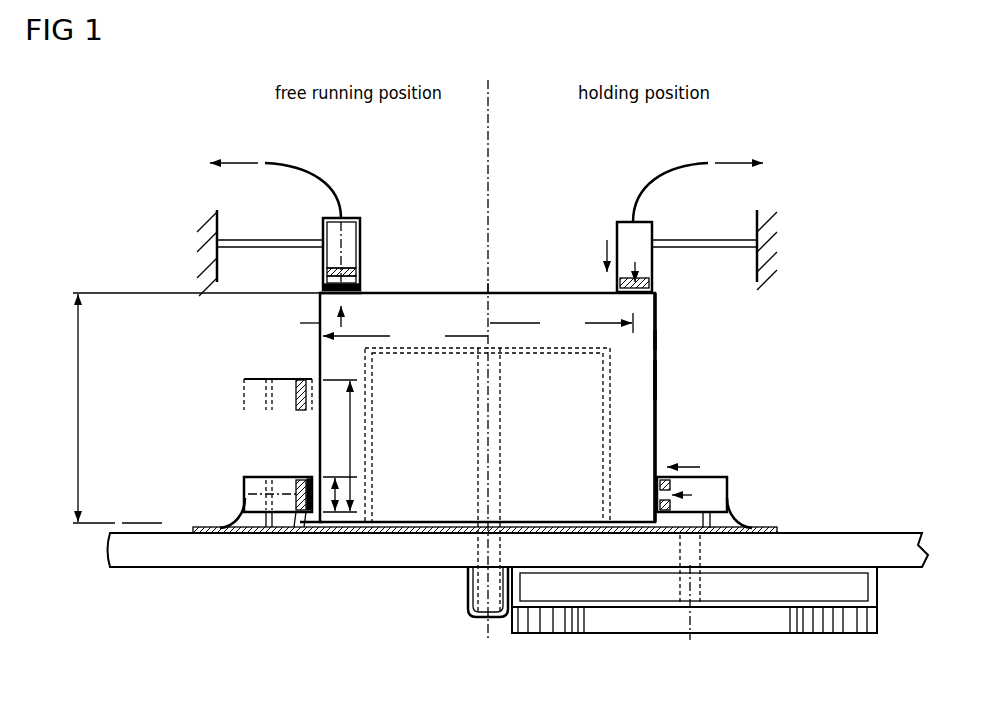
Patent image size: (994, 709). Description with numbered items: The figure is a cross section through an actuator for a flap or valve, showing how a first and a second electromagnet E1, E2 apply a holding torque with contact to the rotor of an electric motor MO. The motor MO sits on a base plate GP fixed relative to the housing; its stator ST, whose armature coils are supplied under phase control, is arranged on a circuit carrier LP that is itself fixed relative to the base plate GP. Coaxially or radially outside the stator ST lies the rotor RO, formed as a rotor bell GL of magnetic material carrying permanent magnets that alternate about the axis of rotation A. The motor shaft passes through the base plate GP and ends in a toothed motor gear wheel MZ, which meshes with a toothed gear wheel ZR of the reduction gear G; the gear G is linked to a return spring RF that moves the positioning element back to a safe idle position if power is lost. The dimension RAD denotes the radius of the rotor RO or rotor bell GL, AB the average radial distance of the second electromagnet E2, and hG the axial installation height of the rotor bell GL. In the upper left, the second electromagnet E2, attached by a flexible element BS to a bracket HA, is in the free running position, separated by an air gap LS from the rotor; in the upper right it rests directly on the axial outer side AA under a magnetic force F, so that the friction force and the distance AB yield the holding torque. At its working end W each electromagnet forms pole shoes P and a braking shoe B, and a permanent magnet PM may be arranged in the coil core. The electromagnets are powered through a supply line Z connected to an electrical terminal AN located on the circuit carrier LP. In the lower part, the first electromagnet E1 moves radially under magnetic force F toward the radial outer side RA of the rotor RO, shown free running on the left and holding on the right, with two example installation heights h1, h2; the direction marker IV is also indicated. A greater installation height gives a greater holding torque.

The axial outer side of the rotor AA is at (460, 290).
The axis of rotation A is at (487, 274).
The electric motor MO is at (668, 320).
The radial outer side of the rotor RA is at (657, 340).
The rotor RO is at (717, 380).
The rotor bell GL is at (657, 378).
The stator ST is at (597, 414).
The reduction gear G is at (627, 522).
The toothed motor gear wheel MZ is at (480, 602).
The toothed gear wheel ZR is at (618, 610).
The return spring RF is at (838, 620).
The circuit carrier LP is at (760, 528).
The base plate GP is at (893, 533).
The first electromagnet E1 is at (252, 477).
The magnetic force F is at (670, 373).
The second electromagnet E2 is at (360, 228).
The permanent magnet PM is at (323, 272).
The pole shoe P is at (373, 254).
The working end W is at (362, 280).
The braking shoe B is at (365, 290).
The supply line Z is at (336, 180).
The electrical terminal AN is at (485, 165).
The flexible element BS is at (258, 240).
The bracket HA is at (205, 245).
The air gap LS is at (320, 293).
The direction IV is at (303, 324).
The radius RAD is at (405, 336).
The average radial distance AB is at (561, 330).
The installation height h1 is at (318, 478).
The installation height h2 is at (343, 445).
The installation height of the rotor bell hG is at (196, 408).